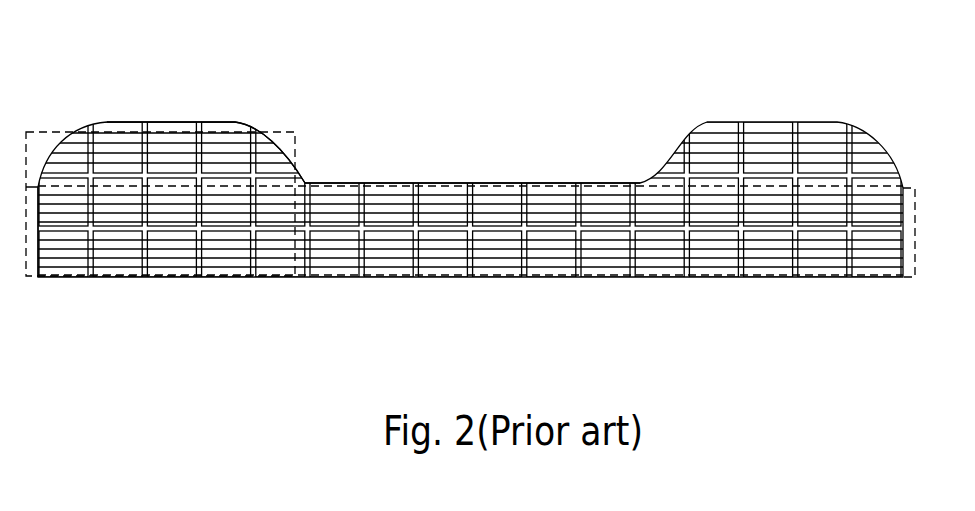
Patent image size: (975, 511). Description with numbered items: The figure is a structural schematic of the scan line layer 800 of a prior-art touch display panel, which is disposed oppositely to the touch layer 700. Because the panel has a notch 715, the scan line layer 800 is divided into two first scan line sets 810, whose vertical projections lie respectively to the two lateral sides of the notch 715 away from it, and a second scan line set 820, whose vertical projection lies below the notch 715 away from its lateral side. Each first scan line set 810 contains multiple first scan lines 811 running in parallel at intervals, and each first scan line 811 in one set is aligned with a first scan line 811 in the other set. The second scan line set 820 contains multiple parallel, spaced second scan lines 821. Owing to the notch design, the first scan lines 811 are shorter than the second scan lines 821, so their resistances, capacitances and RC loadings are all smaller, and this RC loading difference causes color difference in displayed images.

The touch layer 700 is at (768, 125).
The notch 715 is at (450, 172).
The scan line layer 800 is at (22, 38).
The first scan line set 810 is at (69, 130).
The first scan line 811 is at (233, 131).
The second scan line set 820 is at (26, 208).
The second scan line 821 is at (178, 268).